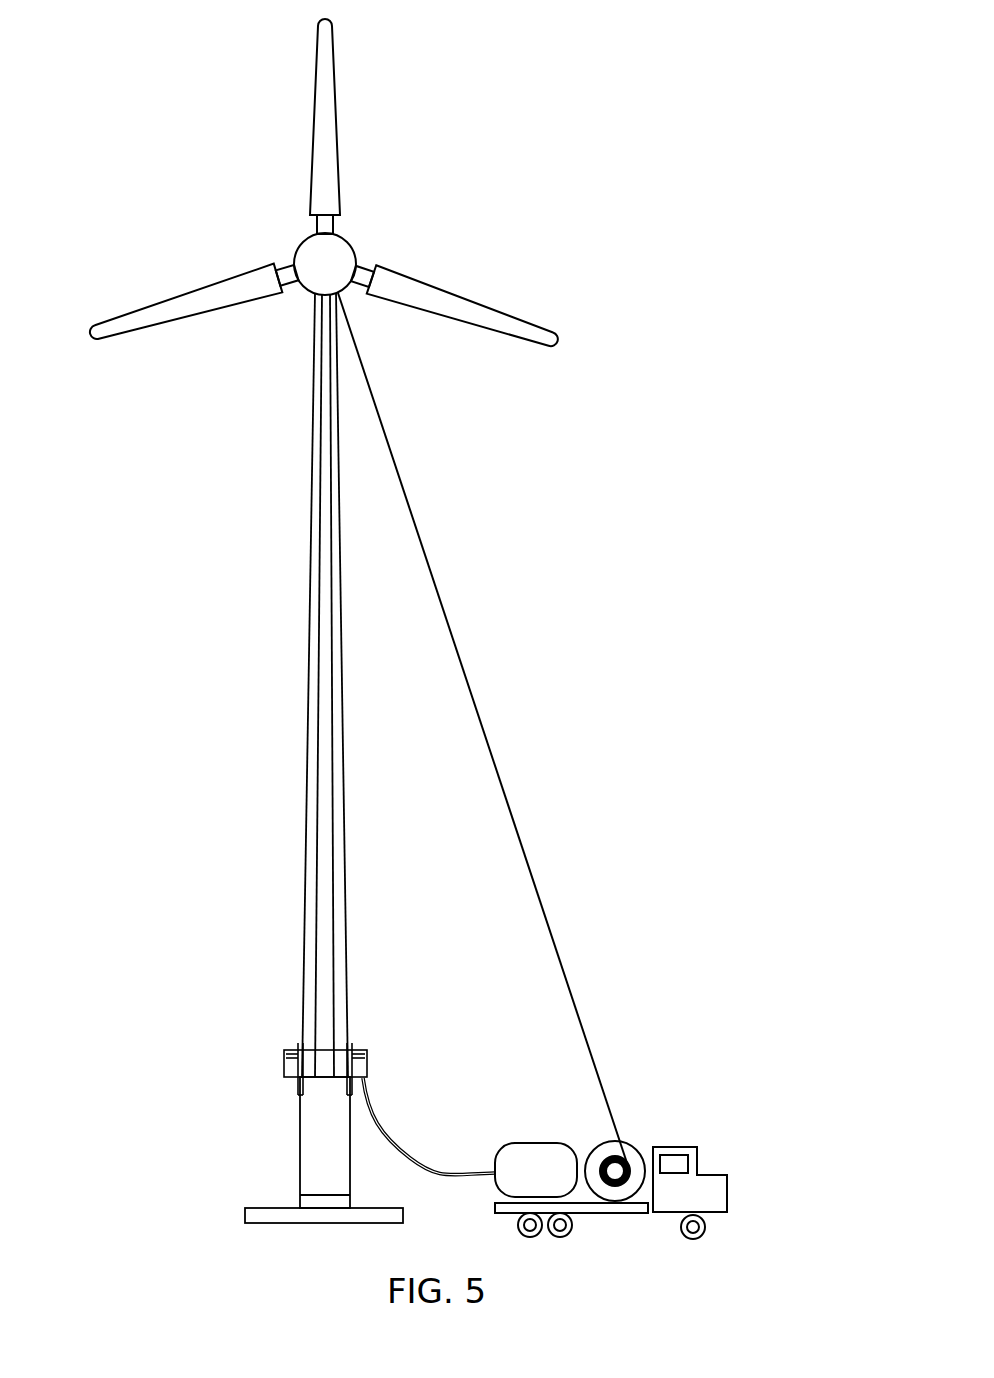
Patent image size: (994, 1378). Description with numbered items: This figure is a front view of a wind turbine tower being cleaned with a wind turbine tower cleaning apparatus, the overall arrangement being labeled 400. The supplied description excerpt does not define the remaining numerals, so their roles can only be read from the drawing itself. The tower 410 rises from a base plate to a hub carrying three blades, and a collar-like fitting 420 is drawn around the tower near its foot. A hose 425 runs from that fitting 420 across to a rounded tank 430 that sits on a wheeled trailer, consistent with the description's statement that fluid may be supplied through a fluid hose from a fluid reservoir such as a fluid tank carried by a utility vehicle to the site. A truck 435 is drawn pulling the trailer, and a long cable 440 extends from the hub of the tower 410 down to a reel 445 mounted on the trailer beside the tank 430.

The wind turbine maintenance system 400 is at (570, 164).
The tower base section 410 is at (300, 1160).
The tower clamp 420 is at (284, 1058).
The hose 425 is at (403, 1153).
The tank 430 is at (522, 1143).
The truck 435 is at (723, 1173).
The cable 440 is at (543, 908).
The reel 445 is at (647, 1147).